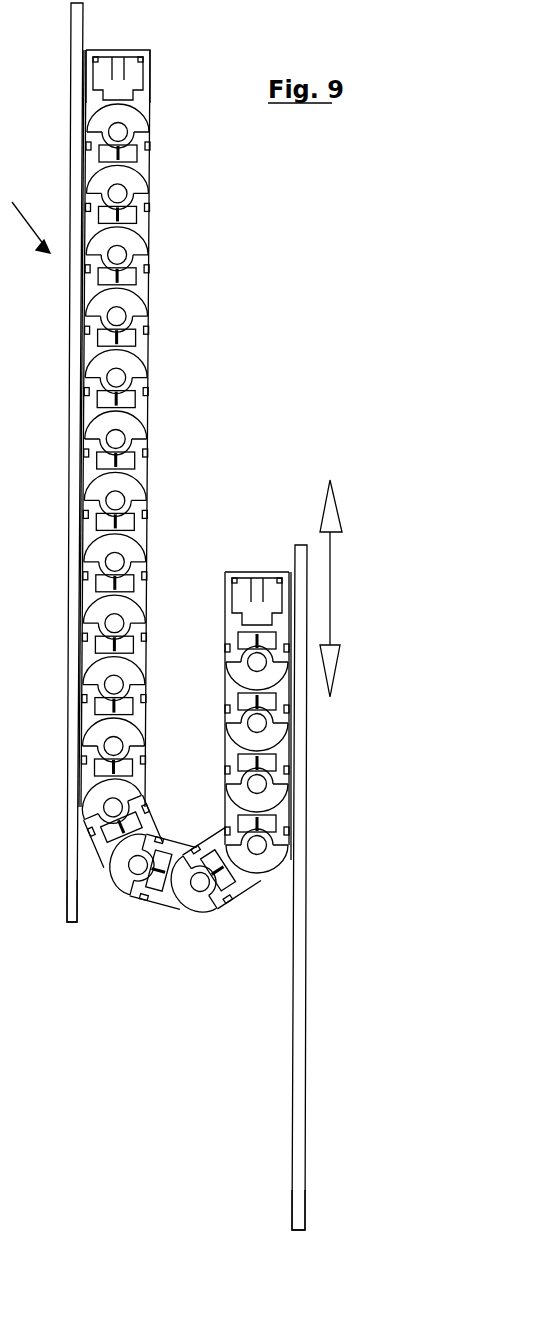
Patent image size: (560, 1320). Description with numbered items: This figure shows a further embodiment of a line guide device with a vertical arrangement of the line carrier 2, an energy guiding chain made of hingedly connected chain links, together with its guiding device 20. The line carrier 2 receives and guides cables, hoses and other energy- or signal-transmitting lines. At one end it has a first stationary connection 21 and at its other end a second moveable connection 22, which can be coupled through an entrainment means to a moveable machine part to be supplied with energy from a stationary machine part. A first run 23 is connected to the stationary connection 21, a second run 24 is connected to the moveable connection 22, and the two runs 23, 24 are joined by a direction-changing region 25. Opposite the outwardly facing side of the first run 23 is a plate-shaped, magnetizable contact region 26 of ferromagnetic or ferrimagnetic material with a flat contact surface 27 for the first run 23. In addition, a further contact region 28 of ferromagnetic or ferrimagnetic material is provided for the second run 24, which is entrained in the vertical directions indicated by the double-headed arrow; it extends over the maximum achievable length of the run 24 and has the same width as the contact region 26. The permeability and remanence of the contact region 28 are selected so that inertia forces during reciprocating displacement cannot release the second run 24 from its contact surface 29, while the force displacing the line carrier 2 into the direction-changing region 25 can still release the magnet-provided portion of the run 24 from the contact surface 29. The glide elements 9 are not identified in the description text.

The line carrier 2 is at (193, 489).
The glide strip 9 is at (82, 168).
The guiding device 20 is at (25, 213).
The first stationary connection 21 is at (148, 52).
The second moveable connection 22 is at (262, 572).
The first run 23 is at (160, 434).
The second run 24 is at (244, 685).
The direction-changing region 25 is at (188, 912).
The contact region 26 is at (72, 525).
The contact surface 27 is at (77, 878).
The further contact region 28 is at (305, 858).
The contact surface 29 is at (293, 928).